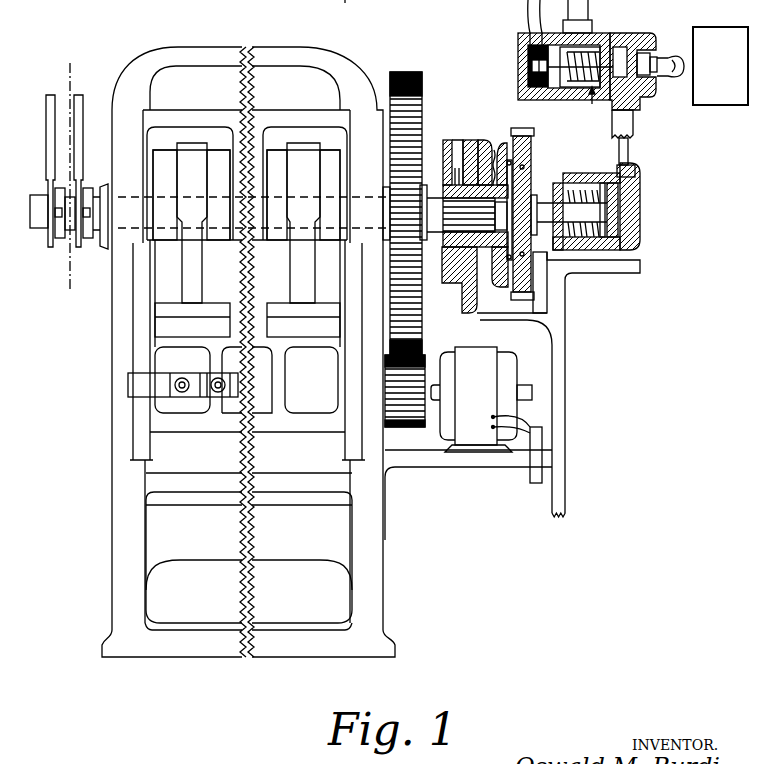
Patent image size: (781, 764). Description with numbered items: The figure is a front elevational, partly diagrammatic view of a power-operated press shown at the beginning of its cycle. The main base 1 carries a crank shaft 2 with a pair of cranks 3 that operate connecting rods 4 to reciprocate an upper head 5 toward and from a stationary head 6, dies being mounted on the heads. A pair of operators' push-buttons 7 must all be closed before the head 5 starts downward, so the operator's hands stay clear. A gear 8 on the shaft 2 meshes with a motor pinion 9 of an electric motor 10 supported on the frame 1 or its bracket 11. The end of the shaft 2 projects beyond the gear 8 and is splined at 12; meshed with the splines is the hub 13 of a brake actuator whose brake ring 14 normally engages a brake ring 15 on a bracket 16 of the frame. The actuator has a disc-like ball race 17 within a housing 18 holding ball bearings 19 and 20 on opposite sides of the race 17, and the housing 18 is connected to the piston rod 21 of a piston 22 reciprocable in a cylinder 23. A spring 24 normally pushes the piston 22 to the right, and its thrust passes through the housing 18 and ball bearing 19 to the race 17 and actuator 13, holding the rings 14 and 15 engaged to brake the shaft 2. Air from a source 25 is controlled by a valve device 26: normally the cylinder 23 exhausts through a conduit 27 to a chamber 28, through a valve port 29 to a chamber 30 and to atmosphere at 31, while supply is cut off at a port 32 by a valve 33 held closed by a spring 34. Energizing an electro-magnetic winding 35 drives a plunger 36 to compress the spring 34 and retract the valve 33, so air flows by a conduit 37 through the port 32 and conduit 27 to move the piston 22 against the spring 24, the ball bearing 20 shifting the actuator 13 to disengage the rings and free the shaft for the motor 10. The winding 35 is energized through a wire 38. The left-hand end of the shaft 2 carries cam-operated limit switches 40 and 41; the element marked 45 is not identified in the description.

The main base 1 is at (379, 516).
The crank shaft 2 is at (66, 80).
The cranks 3 is at (212, 198).
The connecting rods 4 is at (201, 270).
The upper head 5 is at (287, 426).
The stationary head 6 is at (307, 475).
The operators' push-buttons 7 is at (182, 376).
The gear 8 is at (420, 331).
The motor pinion 9 is at (405, 419).
The electric motor 10 is at (490, 394).
The bracket 11 is at (482, 464).
The splines 12 is at (453, 220).
The hub of brake actuator 13 is at (486, 171).
The brake ring 14 is at (455, 141).
The brake ring 15 is at (467, 140).
The bracket 16 is at (486, 140).
The ball race 17 is at (512, 190).
The housing 18 is at (533, 168).
The ball bearing 19 is at (501, 144).
The ball bearing 20 is at (533, 157).
The piston rod 21 is at (546, 224).
The piston 22 is at (629, 201).
The cylinder 23 is at (628, 194).
The spring 24 is at (579, 183).
The source 25 is at (725, 101).
The valve device 26 is at (583, 107).
The conduit 27 is at (631, 149).
The chamber 28 is at (637, 98).
The valve port 29 is at (612, 44).
The chamber 30 is at (570, 90).
The atmosphere outlet 31 is at (588, 6).
The port 32 is at (636, 52).
The valve 33 is at (623, 46).
The spring 34 is at (576, 86).
The electro-magnetic winding 35 is at (518, 80).
The plunger 36 is at (530, 66).
The conduit 37 is at (662, 80).
The wire 38 is at (529, 27).
The cam-operated limit switch 40 is at (42, 163).
The cam-operated limit switch 41 is at (86, 161).
The pipe 45 is at (356, 7).